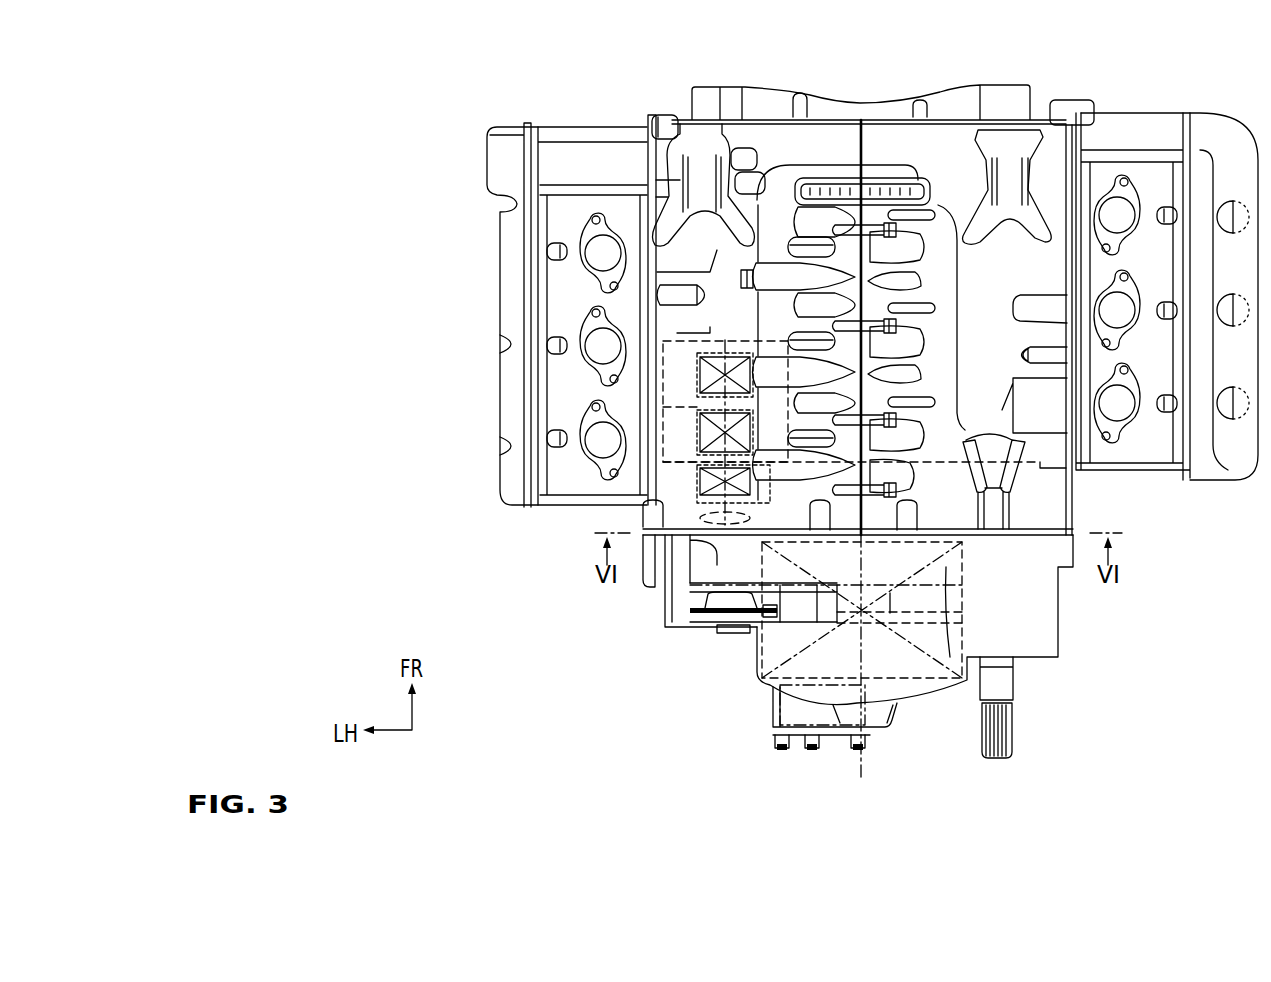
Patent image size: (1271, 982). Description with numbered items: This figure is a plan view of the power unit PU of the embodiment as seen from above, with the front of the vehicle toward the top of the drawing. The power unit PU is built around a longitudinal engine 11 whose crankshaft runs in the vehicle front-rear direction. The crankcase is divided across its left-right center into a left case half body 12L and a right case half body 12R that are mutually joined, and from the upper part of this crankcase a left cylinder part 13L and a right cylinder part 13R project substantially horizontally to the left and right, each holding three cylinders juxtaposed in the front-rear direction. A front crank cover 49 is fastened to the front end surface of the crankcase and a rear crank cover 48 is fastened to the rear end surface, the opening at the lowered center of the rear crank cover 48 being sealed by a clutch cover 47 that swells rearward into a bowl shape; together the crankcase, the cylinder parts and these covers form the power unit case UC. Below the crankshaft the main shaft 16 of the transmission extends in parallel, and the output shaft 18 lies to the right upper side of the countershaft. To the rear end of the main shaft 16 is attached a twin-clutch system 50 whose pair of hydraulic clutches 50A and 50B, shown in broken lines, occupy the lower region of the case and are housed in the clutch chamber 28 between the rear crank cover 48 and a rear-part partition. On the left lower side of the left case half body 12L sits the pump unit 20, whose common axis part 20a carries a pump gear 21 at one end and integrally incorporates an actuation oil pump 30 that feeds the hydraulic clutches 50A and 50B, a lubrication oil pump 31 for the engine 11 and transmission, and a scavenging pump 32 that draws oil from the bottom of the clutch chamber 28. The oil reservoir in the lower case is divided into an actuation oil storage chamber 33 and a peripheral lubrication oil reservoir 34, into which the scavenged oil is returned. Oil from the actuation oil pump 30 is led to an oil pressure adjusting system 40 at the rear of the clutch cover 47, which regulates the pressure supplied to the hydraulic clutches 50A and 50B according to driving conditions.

The power unit PU is at (1033, 65).
The engine 11 is at (1097, 86).
The left case half body 12L is at (815, 130).
The right case half body 12R is at (920, 130).
The left cylinder part 13L is at (560, 126).
The right cylinder part 13R is at (1167, 135).
The main shaft 16 is at (864, 753).
The output shaft 18 is at (1010, 683).
The pump unit 20 is at (690, 509).
The axis part 20a is at (697, 407).
The pump gear 21 is at (703, 542).
The clutch chamber 28 is at (945, 485).
The actuation oil pump 30 is at (697, 433).
The lubrication oil pump 31 is at (697, 373).
The scavenging pump 32 is at (697, 480).
The actuation oil storage chamber 33 is at (680, 340).
The lubrication oil reservoir 34 is at (715, 283).
The oil pressure adjusting system 40 is at (773, 708).
The clutch cover 47 is at (925, 690).
The rear crank cover 48 is at (648, 568).
The front crank cover 49 is at (771, 100).
The clutch system 50 is at (578, 731).
The hydraulic clutch 50A is at (752, 570).
The hydraulic clutch 50B is at (750, 663).
The power unit case UC is at (713, 116).